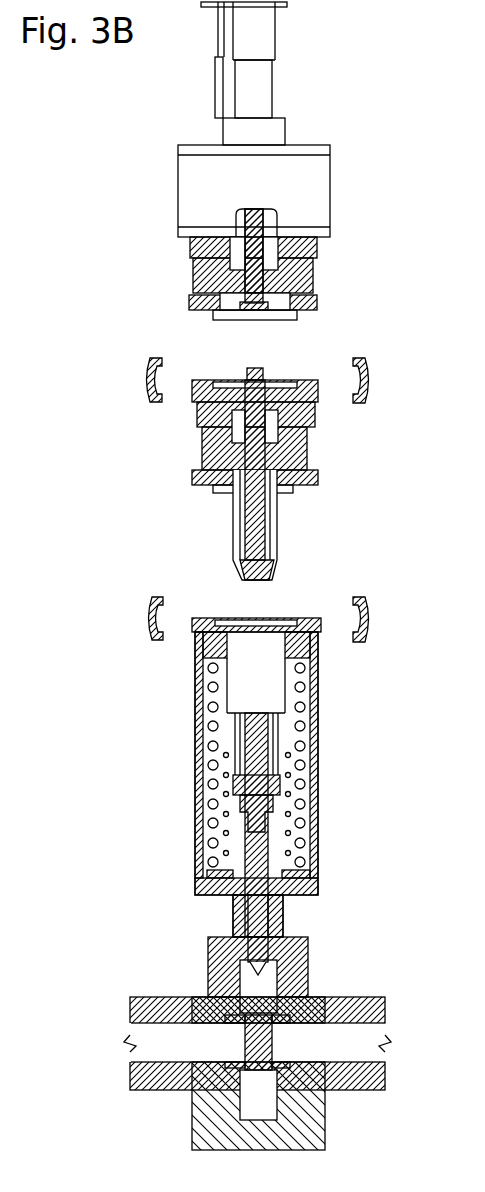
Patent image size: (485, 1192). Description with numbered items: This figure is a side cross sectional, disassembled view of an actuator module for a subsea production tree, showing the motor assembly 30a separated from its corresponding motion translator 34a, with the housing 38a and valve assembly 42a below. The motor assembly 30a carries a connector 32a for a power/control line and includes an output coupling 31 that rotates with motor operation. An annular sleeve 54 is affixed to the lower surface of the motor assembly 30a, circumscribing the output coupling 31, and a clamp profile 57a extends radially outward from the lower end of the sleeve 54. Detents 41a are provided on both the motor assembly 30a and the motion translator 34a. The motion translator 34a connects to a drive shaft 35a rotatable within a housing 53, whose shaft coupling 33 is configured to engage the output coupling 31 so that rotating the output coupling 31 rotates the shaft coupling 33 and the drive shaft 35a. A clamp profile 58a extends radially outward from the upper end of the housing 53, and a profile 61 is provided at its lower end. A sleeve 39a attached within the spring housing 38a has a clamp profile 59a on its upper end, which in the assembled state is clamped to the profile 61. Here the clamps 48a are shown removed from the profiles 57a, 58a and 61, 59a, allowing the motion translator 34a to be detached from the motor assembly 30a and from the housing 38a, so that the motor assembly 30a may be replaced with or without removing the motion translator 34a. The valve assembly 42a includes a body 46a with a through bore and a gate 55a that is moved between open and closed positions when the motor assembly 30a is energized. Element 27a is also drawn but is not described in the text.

The connector 32a is at (275, 80).
The motor assembly 30a is at (178, 183).
The detents 41a is at (257, 318).
The annular sleeve 54 is at (307, 278).
The clamp profile 57a is at (318, 305).
The output coupling 31 is at (255, 307).
The shaft coupling 33 is at (262, 369).
The clamp 48a is at (367, 378).
The clamp profile 58a is at (320, 386).
The housing 53 is at (315, 418).
The motion translator 34a is at (319, 454).
The profile 61 is at (318, 476).
The drive shaft 35a is at (277, 532).
The clamp profile 59a is at (321, 627).
The spring housing 38a is at (272, 773).
The sleeve 39a is at (285, 727).
The spring seat 27a is at (287, 795).
The valve assembly 42a is at (274, 1022).
The body 46a is at (197, 997).
The gate 55a is at (273, 1040).